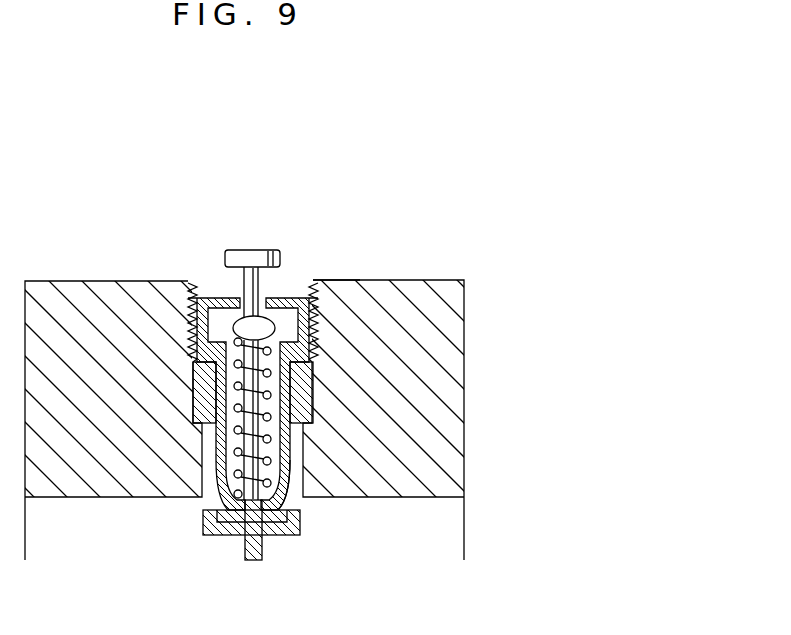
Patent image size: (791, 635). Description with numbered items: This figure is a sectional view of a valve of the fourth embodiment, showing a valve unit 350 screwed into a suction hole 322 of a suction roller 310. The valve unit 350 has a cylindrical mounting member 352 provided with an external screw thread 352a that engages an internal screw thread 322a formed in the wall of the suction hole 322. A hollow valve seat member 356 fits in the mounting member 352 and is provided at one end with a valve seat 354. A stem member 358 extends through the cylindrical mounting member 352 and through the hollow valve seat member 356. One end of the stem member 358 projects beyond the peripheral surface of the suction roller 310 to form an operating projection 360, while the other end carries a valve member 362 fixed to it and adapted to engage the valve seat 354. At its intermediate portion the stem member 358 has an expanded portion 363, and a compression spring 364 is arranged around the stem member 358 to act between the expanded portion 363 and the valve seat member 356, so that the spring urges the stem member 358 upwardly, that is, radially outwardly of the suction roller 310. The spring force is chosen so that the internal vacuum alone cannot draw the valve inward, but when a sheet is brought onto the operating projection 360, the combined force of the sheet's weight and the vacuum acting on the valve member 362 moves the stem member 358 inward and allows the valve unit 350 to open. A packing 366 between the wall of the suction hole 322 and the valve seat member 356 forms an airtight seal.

The suction roller 310 is at (65, 287).
The suction hole 322 is at (287, 279).
The internal screw thread 322a is at (303, 279).
The valve unit 350 is at (357, 317).
The cylindrical mounting member 352 is at (204, 293).
The external screw thread 352a is at (316, 338).
The valve seat 354 is at (281, 522).
The hollow valve seat member 356 is at (289, 500).
The stem member 358 is at (215, 392).
The operating projection 360 is at (255, 257).
The valve member 362 is at (225, 531).
The expanded portion 363 is at (233, 317).
The compression spring 364 is at (242, 458).
The packing 366 is at (218, 426).